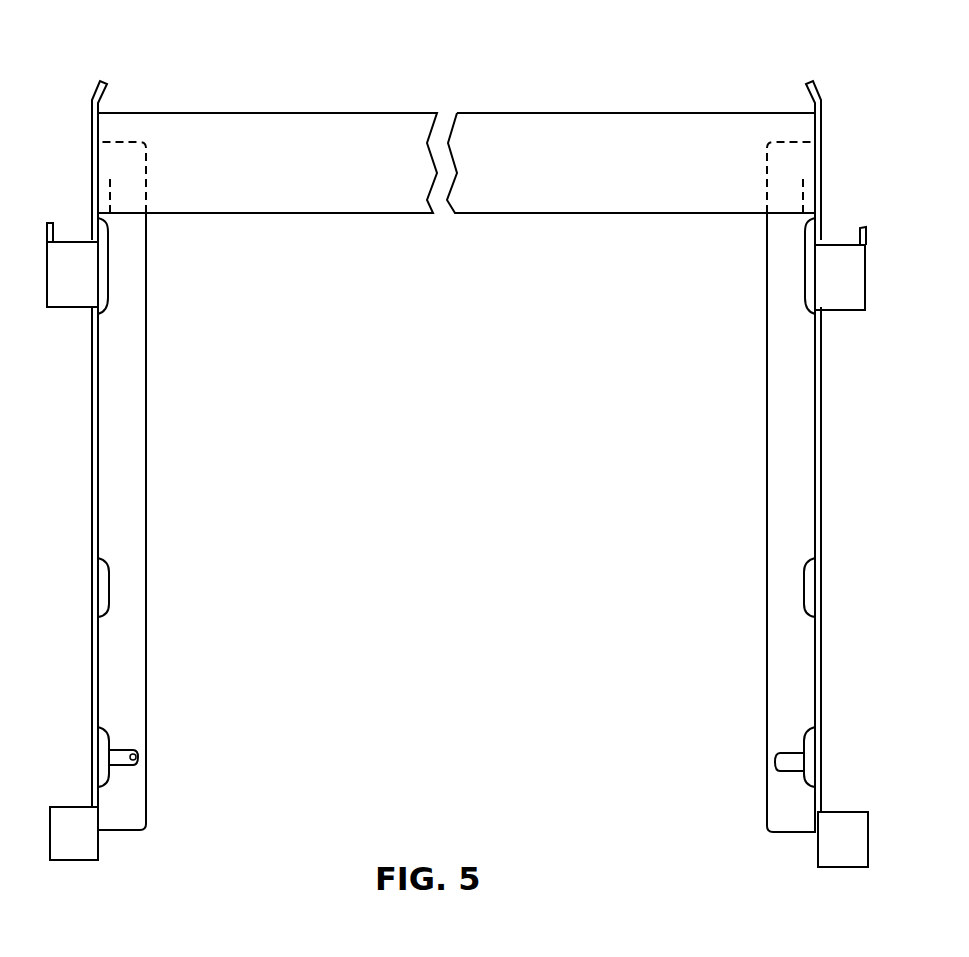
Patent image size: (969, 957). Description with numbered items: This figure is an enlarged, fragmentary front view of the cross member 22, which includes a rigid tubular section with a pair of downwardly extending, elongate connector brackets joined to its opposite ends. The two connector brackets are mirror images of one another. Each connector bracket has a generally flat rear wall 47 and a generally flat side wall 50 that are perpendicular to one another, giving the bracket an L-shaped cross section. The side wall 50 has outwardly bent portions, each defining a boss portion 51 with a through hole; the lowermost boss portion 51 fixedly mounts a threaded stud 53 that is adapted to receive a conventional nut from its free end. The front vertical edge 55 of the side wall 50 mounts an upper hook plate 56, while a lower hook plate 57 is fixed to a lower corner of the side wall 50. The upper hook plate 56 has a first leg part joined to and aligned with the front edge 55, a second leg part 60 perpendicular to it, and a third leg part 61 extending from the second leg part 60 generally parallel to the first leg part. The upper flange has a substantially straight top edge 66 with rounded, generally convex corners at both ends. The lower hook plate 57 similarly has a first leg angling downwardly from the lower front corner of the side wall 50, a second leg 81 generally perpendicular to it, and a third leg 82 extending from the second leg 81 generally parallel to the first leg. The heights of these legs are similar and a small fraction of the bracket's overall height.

The cross member 22 is at (345, 97).
The rear wall 47 is at (125, 490).
The side wall 50 is at (93, 496).
The boss portion 51 is at (107, 247).
The threaded stud 53 is at (137, 750).
The front vertical edge 55 is at (97, 438).
The upper hook plate 56 is at (44, 256).
The lower hook plate 57 is at (73, 866).
The second leg part 60 is at (80, 285).
The third leg part 61 is at (38, 292).
The top edge 66 is at (50, 225).
The second leg 81 is at (87, 838).
The third leg 82 is at (52, 810).